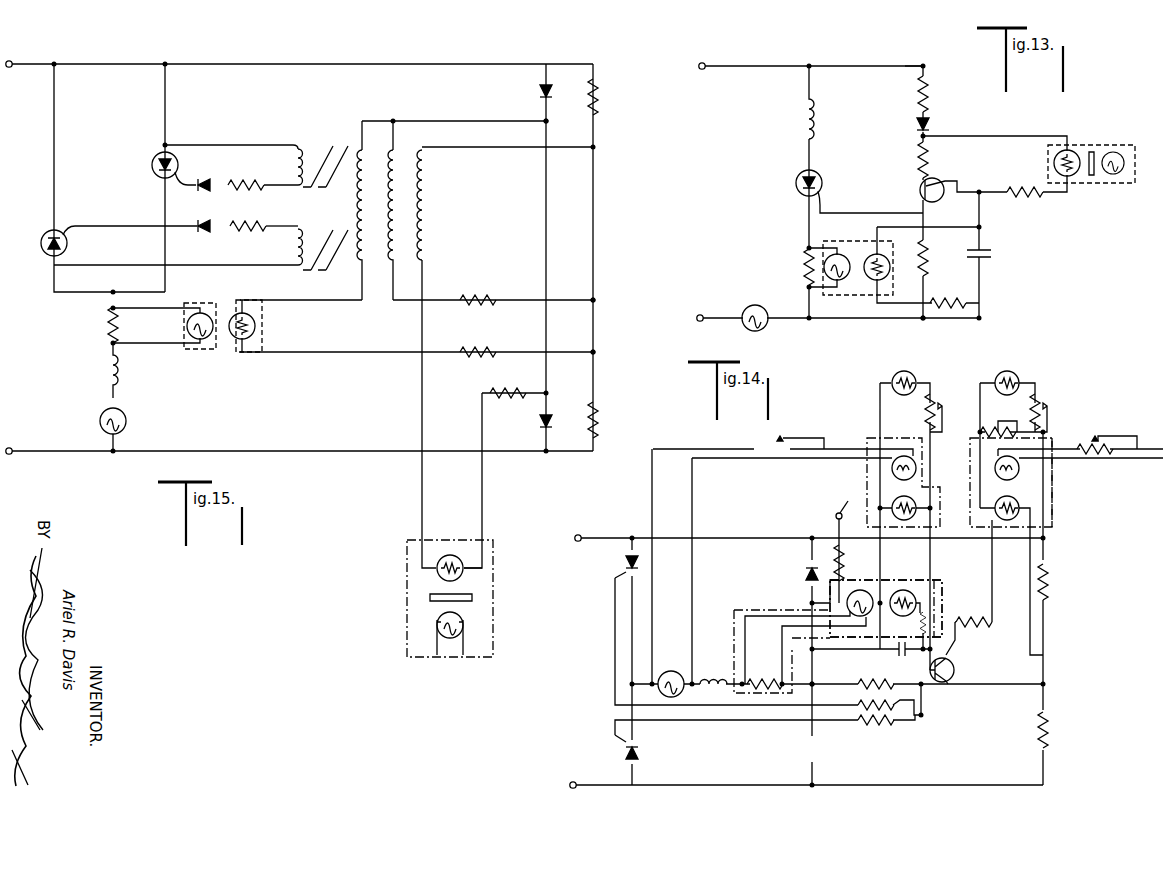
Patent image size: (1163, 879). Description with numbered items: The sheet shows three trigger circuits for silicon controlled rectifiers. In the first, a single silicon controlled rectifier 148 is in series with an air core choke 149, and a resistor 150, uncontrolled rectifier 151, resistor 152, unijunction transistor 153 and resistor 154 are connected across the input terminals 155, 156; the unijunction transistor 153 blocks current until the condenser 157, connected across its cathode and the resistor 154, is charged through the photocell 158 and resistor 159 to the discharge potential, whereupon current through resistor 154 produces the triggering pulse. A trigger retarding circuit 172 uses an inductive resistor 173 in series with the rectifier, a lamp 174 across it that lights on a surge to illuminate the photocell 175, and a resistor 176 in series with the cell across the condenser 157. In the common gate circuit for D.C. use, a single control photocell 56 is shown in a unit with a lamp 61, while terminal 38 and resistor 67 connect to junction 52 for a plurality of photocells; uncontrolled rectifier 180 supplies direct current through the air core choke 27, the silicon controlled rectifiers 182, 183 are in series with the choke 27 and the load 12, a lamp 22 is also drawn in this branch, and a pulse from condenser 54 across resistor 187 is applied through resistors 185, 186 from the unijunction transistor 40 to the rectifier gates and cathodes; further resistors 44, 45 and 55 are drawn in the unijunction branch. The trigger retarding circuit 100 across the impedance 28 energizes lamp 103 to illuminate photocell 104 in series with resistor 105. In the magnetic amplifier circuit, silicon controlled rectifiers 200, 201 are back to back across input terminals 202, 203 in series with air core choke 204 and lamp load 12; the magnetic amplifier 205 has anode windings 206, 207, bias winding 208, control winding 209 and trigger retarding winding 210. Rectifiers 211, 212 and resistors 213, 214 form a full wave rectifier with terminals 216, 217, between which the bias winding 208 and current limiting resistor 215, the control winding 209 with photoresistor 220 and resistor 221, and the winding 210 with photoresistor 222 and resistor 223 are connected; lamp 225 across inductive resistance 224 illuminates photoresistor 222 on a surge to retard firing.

In FIG. 15, the lamp load 12 is at (127, 418).
In FIG. 14, the lamp 22 is at (668, 671).
In FIG. 14, the air core choke 27 is at (713, 677).
In FIG. 14, the impedance 28 is at (760, 690).
In FIG. 14, the terminal 38 is at (839, 501).
In FIG. 14, the unijunction transistor 40 is at (956, 670).
In FIG. 14, the resistor 44 is at (1046, 585).
In FIG. 14, the resistor 45 is at (1047, 730).
In FIG. 14, the junction 52 is at (812, 690).
In FIG. 14, the condenser 54 is at (906, 660).
In FIG. 14, the resistor 55 is at (983, 632).
In FIG. 14, the control photocell 56 is at (1020, 498).
In FIG. 15, the lamp 61 is at (463, 623).
In FIG. 14, the lamp 61 is at (1020, 476).
In FIG. 14, the resistor 67 is at (839, 556).
In FIG. 14, the trigger retarding circuit 100 is at (893, 582).
In FIG. 14, the lamp 103 is at (858, 588).
In FIG. 14, the photocell 104 is at (908, 590).
In FIG. 14, the resistor 105 is at (925, 612).
In FIG. 13, the silicon controlled rectifier 148 is at (797, 174).
In FIG. 13, the air core choke 149 is at (816, 112).
In FIG. 13, the resistor 150 is at (931, 92).
In FIG. 13, the uncontrolled rectifier 151 is at (931, 124).
In FIG. 13, the resistor 152 is at (931, 154).
In FIG. 13, the unijunction transistor 153 is at (945, 200).
In FIG. 13, the resistor 154 is at (928, 250).
In FIG. 13, the input terminal 155 is at (927, 68).
In FIG. 13, the input terminal 156 is at (926, 322).
In FIG. 13, the condenser 157 is at (992, 258).
In FIG. 13, the photocell 158 is at (1074, 152).
In FIG. 13, the resistor 159 is at (1022, 199).
In FIG. 13, the trigger retarding circuit 172 is at (857, 296).
In FIG. 13, the inductive resistor 173 is at (805, 270).
In FIG. 13, the lamp 174 is at (844, 254).
In FIG. 13, the photocell 175 is at (866, 254).
In FIG. 13, the resistor 176 is at (951, 301).
In FIG. 14, the uncontrolled rectifier 180 is at (803, 572).
In FIG. 14, the silicon controlled rectifier 182 is at (622, 562).
In FIG. 14, the silicon controlled rectifier 183 is at (622, 752).
In FIG. 14, the resistor 185 is at (915, 700).
In FIG. 14, the resistor 186 is at (878, 724).
In FIG. 14, the resistor 187 is at (873, 682).
In FIG. 15, the silicon controlled rectifier 200 is at (67, 243).
In FIG. 15, the silicon controlled rectifier 201 is at (152, 168).
In FIG. 15, the input terminal 202 is at (12, 61).
In FIG. 15, the input terminal 203 is at (12, 448).
In FIG. 15, the air core choke 204 is at (121, 378).
In FIG. 15, the magnetic amplifier 205 is at (353, 112).
In FIG. 15, the anode winding 206 is at (292, 168).
In FIG. 15, the anode winding 207 is at (292, 252).
In FIG. 15, the bias winding 208 is at (390, 200).
In FIG. 15, the control winding 209 is at (424, 236).
In FIG. 15, the trigger retarding winding 210 is at (363, 158).
In FIG. 15, the rectifier 211 is at (538, 93).
In FIG. 15, the rectifier 212 is at (538, 422).
In FIG. 15, the resistor 213 is at (597, 100).
In FIG. 15, the resistor 214 is at (596, 412).
In FIG. 15, the current limiting resistor 215 is at (484, 297).
In FIG. 15, the terminal 216 is at (593, 301).
In FIG. 15, the terminal 217 is at (549, 124).
In FIG. 15, the photoresistor 220 is at (450, 554).
In FIG. 15, the resistor 221 is at (492, 392).
In FIG. 15, the photoresistor 222 is at (256, 328).
In FIG. 15, the resistor 223 is at (486, 350).
In FIG. 15, the inductive resistance 224 is at (106, 325).
In FIG. 15, the lamp 225 is at (207, 311).